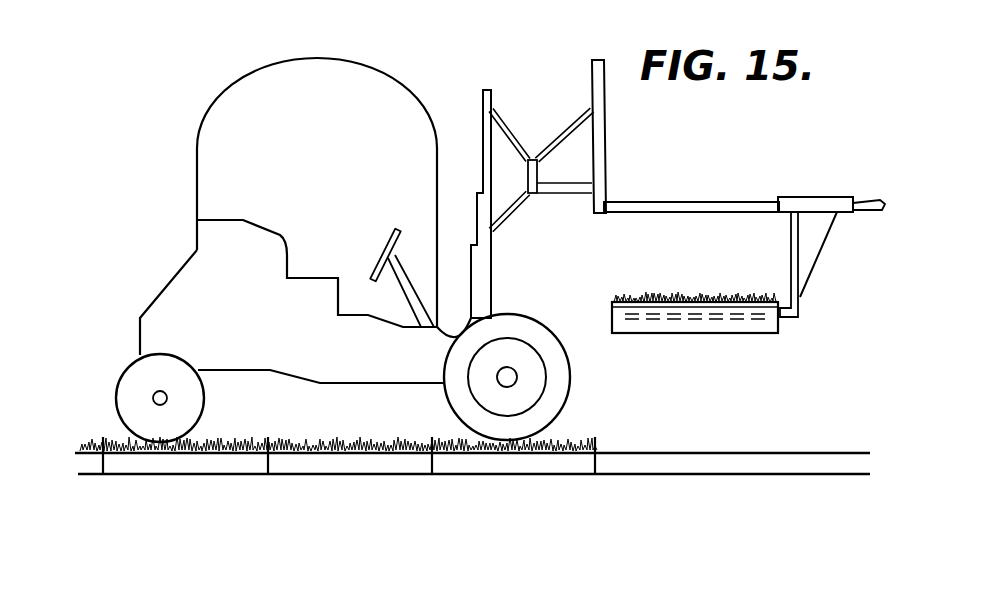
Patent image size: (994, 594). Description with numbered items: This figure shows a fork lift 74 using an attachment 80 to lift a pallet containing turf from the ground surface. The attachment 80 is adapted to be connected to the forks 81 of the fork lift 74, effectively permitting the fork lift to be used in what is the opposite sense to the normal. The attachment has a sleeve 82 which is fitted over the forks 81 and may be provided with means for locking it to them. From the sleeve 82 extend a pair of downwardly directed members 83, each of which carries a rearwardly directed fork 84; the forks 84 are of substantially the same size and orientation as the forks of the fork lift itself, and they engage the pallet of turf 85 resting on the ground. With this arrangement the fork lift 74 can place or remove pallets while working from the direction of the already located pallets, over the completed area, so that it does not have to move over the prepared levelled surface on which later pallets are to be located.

The fork lift 74 is at (186, 196).
The attachment 80 is at (841, 185).
The forks 81 is at (672, 203).
The sleeve 82 is at (790, 197).
The downwardly directed members 83 is at (803, 293).
The rearwardly directed forks 84 is at (781, 320).
The sod strip 85 is at (708, 343).